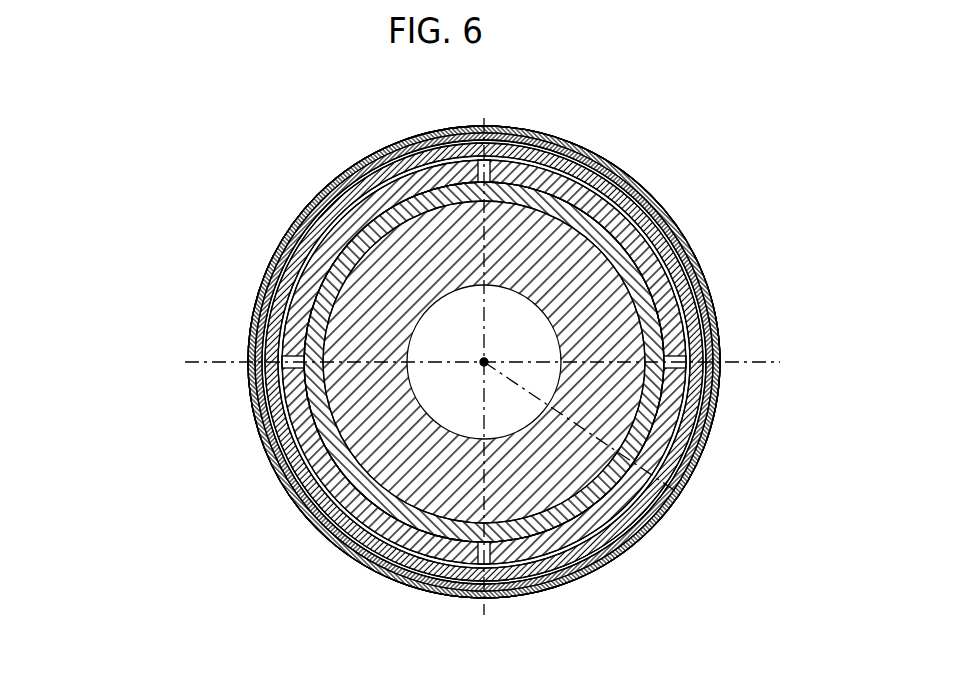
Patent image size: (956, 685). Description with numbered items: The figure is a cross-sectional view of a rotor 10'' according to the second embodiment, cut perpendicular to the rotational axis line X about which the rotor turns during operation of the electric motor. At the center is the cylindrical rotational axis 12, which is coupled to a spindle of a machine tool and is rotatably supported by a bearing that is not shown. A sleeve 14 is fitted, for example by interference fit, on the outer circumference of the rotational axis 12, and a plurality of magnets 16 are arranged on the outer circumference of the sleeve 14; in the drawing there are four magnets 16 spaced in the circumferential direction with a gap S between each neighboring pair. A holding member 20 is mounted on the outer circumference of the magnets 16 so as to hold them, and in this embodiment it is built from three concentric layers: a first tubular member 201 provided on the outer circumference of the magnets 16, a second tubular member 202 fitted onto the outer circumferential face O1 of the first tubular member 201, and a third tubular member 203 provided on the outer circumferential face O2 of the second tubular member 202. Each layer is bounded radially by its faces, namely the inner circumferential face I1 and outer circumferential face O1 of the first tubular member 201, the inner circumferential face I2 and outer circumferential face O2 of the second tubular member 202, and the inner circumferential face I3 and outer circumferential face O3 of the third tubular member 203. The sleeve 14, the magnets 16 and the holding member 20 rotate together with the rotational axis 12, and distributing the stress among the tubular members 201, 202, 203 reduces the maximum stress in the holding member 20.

The rotor 10'' is at (399, 350).
The rotational axis 12 is at (632, 190).
The sleeve 14 is at (704, 274).
The magnets 16 is at (281, 238).
The holding member 20 is at (317, 101).
The first tubular member 201 is at (321, 190).
The second tubular member 202 is at (348, 176).
The third tubular member 203 is at (290, 227).
The outer circumferential face of first tubular member O1 is at (303, 486).
The inner circumferential face of first tubular member I1 is at (330, 520).
The outer circumferential face of second tubular member O2 is at (260, 432).
The inner circumferential face of second tubular member I2 is at (268, 457).
The outer circumferential face of third tubular member O3 is at (250, 378).
The inner circumferential face of third tubular member I3 is at (252, 398).
The gap S is at (489, 160).
The rotational axis line X is at (687, 487).